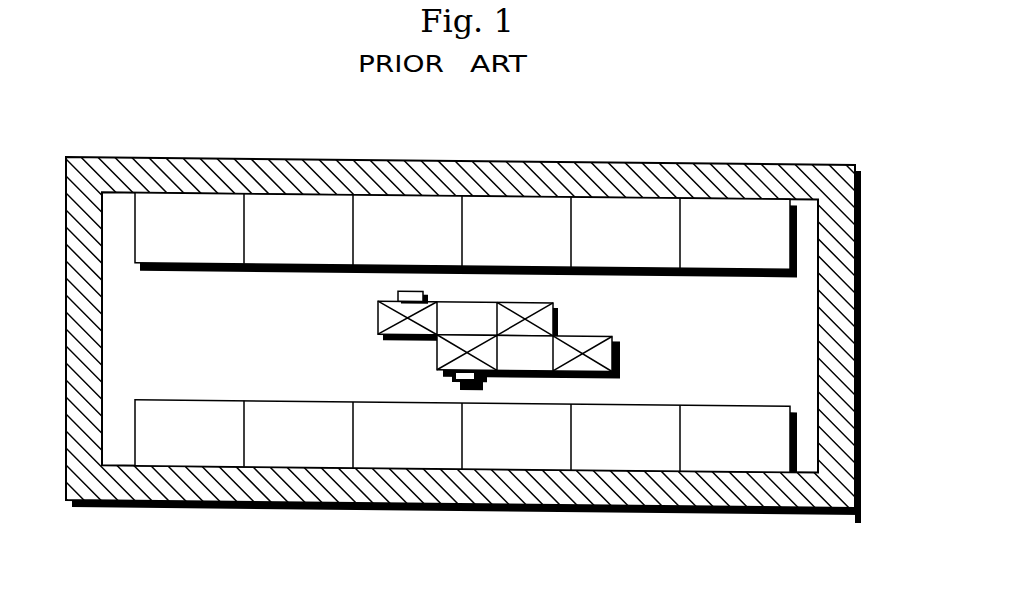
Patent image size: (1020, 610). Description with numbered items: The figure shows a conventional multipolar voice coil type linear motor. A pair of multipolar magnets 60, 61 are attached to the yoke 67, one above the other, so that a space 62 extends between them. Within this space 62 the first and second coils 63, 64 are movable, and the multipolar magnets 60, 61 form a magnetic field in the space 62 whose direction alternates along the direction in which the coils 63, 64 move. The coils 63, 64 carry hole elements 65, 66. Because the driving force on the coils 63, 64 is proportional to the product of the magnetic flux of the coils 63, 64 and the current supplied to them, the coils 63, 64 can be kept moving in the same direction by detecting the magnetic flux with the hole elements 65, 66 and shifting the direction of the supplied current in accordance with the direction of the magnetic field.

The multipolar magnet 60 is at (377, 454).
The multipolar magnet 61 is at (441, 215).
The space 62 is at (778, 351).
The first coil 63 is at (614, 356).
The second coil 64 is at (382, 318).
The hole element 65 is at (470, 386).
The hole element 66 is at (397, 287).
The yoke 67 is at (223, 488).